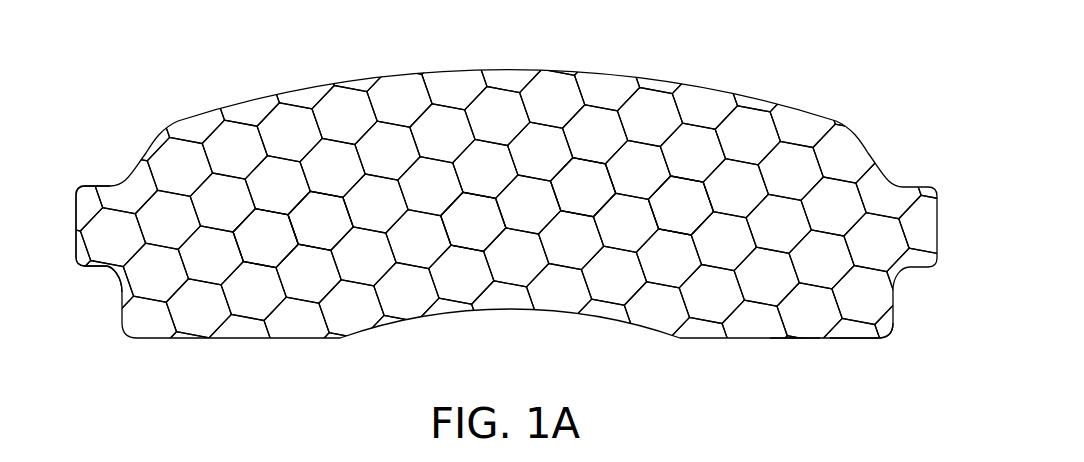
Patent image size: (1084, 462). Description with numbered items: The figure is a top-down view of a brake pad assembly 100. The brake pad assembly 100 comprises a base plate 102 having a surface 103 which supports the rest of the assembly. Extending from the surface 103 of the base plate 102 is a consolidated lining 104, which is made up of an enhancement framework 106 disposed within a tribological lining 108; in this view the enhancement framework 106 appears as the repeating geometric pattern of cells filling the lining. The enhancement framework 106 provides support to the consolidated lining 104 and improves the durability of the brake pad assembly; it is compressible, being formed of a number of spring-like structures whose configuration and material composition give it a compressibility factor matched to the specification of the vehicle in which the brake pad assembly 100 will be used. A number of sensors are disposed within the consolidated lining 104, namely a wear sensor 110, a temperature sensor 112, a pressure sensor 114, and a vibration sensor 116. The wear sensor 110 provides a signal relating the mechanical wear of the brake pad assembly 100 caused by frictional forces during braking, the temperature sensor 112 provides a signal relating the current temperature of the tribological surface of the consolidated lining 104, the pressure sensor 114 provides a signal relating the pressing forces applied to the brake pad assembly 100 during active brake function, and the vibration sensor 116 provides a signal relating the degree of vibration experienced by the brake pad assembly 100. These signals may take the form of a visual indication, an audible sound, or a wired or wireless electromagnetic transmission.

The brake pad assembly 100 is at (888, 88).
The base plate 102 is at (845, 349).
The surface 103 is at (792, 349).
The consolidated lining 104 is at (143, 152).
The enhancement framework 106 is at (277, 268).
The tribological lining 108 is at (280, 123).
The wear sensor 110 is at (323, 222).
The temperature sensor 112 is at (473, 222).
The pressure sensor 114 is at (580, 188).
The vibration sensor 116 is at (680, 205).